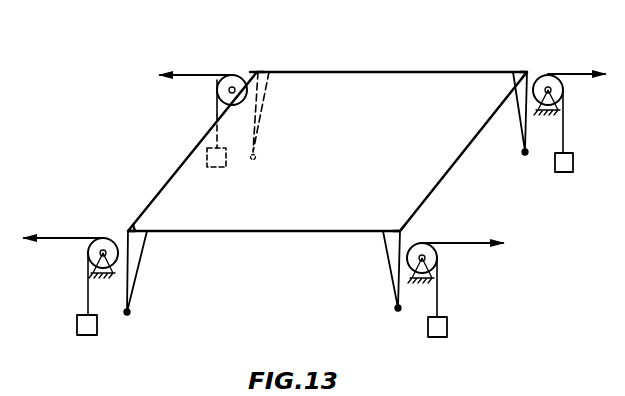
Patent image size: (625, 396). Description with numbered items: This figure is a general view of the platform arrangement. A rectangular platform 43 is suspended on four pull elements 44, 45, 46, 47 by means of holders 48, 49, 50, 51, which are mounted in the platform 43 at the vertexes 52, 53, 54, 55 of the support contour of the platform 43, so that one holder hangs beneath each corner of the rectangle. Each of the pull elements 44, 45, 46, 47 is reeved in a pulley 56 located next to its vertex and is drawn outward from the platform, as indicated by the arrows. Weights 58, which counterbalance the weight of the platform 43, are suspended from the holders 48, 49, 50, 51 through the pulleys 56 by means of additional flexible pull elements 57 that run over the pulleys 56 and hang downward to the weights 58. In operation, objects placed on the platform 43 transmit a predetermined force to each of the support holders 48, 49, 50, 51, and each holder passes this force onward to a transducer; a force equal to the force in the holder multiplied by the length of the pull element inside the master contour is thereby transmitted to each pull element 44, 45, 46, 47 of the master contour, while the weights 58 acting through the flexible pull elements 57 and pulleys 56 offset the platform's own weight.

The rectangular platform 43 is at (377, 72).
The pull element 44 is at (469, 242).
The pull element 45 is at (577, 72).
The pull element 46 is at (187, 74).
The pull element 47 is at (62, 237).
The holder 48 is at (388, 255).
The holder 49 is at (518, 107).
The holder 50 is at (267, 88).
The holder 51 is at (140, 258).
The vertex 52 is at (398, 229).
The vertex 53 is at (524, 70).
The vertex 54 is at (259, 70).
The frame corner 55 is at (131, 228).
The pulley 56 is at (229, 75).
The additional flexible pull element 57 is at (216, 108).
The weight 58 is at (557, 164).